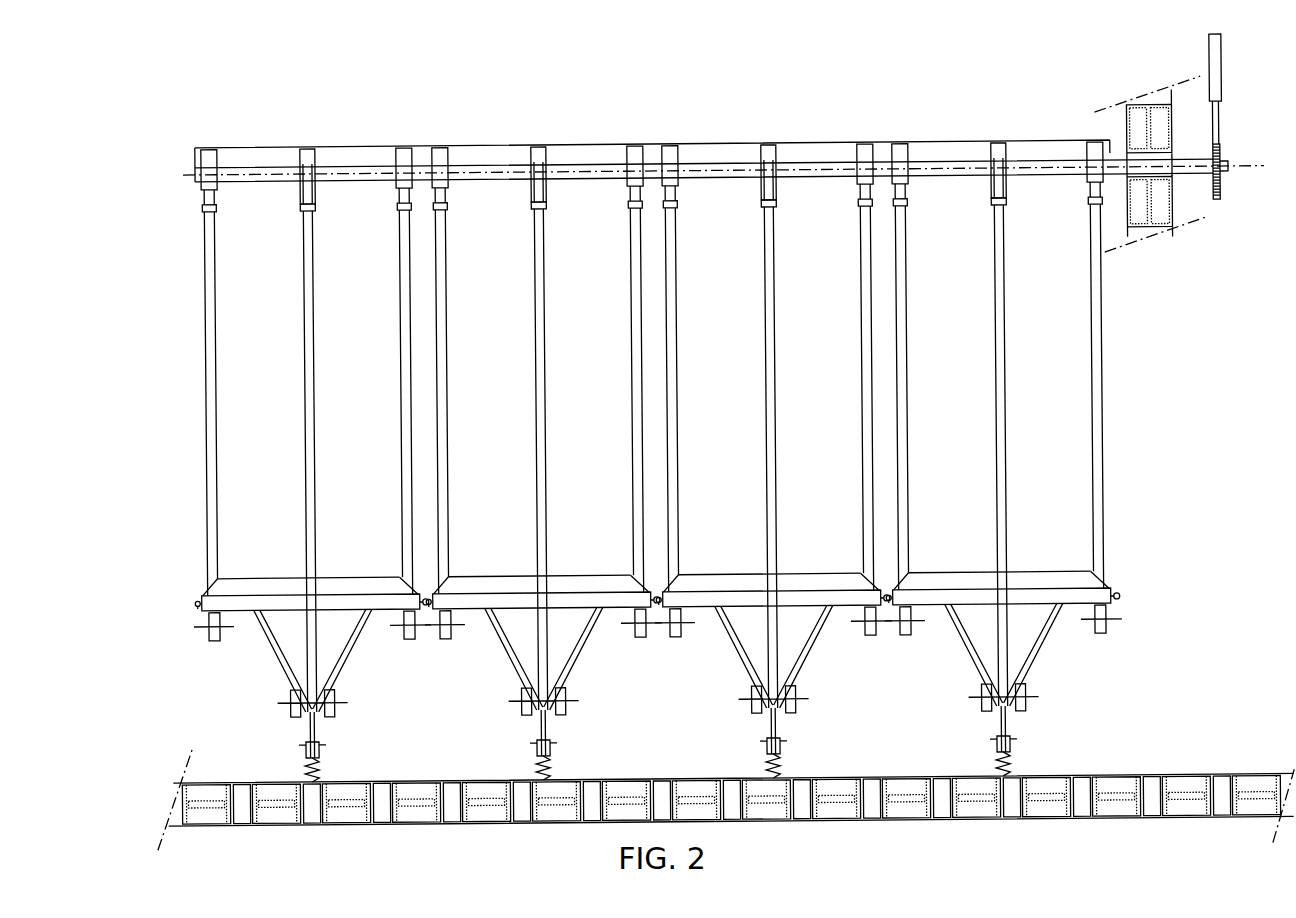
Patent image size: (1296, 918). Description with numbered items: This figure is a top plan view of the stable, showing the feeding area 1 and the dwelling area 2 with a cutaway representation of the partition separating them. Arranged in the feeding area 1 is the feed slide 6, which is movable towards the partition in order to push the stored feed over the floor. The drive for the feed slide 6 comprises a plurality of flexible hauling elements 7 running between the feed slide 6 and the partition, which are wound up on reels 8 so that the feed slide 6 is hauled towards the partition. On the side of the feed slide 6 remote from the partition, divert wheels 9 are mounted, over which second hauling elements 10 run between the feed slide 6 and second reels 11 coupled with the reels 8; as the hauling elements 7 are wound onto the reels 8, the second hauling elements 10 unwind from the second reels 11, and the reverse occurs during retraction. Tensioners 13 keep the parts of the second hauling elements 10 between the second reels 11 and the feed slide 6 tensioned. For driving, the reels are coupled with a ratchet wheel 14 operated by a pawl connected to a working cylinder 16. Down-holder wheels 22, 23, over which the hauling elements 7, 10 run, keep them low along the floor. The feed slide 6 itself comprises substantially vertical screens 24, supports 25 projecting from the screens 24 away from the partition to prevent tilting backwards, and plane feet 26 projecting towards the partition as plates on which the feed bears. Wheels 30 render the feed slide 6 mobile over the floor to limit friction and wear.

The feeding area 1 is at (580, 430).
The dwelling area 2 is at (645, 122).
The feed slide 6 is at (385, 590).
The flexible hauling elements 7 is at (206, 345).
The reels 8 is at (208, 176).
The divert wheels 9 is at (303, 749).
The second hauling elements 10 is at (305, 343).
The second reels 11 is at (302, 182).
The tensioners 13 is at (318, 762).
The ratchet wheel 14 is at (1224, 187).
The working cylinder 16 is at (1220, 87).
The down-holder wheels 22 is at (207, 204).
The down-holder wheels 23 is at (305, 208).
The screens 24 is at (280, 600).
The supports 25 is at (277, 660).
The plane feet 26 is at (345, 577).
The wheels 30 is at (213, 637).